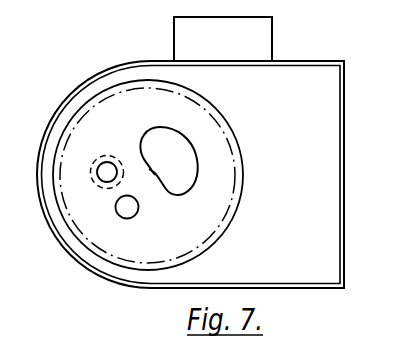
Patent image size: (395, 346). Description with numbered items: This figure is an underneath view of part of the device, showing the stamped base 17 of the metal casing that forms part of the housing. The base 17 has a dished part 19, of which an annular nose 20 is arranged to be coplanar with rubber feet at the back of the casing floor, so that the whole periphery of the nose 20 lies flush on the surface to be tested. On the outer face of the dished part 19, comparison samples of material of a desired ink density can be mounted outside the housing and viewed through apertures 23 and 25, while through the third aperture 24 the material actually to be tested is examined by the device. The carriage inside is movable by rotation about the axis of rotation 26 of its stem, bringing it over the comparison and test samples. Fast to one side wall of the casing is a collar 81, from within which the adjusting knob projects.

The base 17 is at (273, 117).
The collar 81 is at (248, 53).
The dished part 19 is at (128, 125).
The annular nose 20 is at (107, 172).
The aperture 23 is at (172, 150).
The aperture 24 is at (106, 172).
The aperture 25 is at (126, 207).
The axis of rotation 26 is at (153, 176).